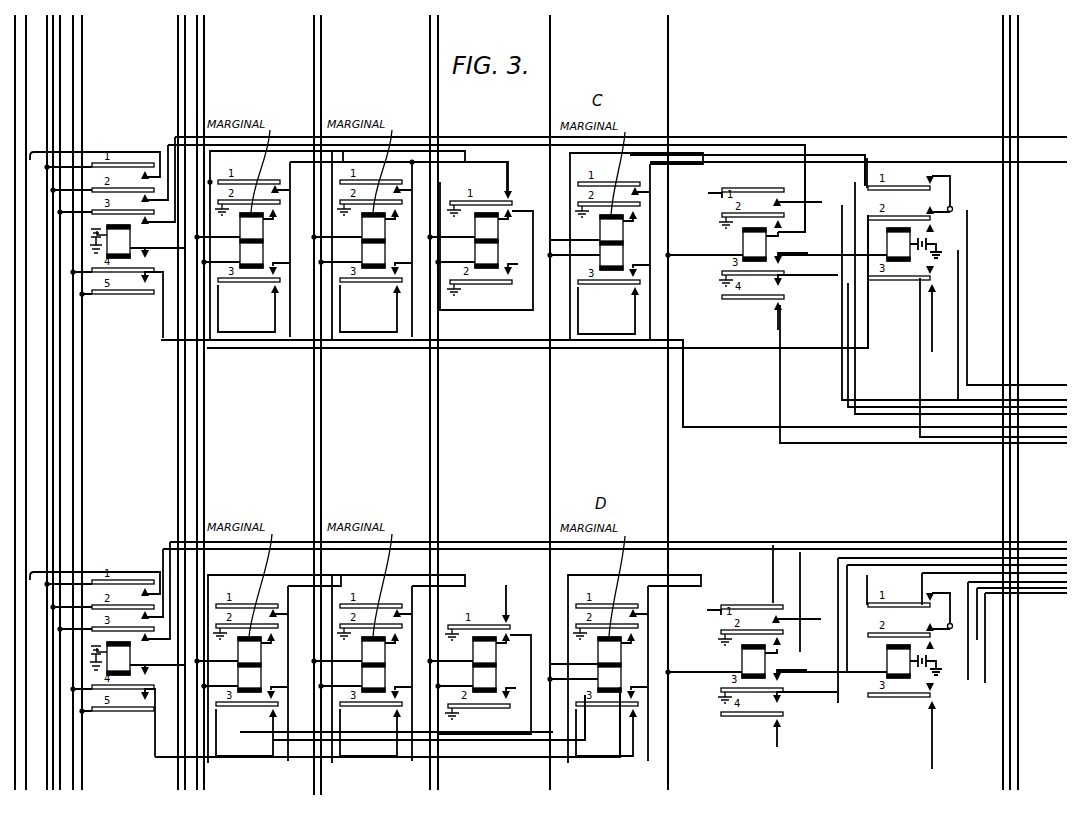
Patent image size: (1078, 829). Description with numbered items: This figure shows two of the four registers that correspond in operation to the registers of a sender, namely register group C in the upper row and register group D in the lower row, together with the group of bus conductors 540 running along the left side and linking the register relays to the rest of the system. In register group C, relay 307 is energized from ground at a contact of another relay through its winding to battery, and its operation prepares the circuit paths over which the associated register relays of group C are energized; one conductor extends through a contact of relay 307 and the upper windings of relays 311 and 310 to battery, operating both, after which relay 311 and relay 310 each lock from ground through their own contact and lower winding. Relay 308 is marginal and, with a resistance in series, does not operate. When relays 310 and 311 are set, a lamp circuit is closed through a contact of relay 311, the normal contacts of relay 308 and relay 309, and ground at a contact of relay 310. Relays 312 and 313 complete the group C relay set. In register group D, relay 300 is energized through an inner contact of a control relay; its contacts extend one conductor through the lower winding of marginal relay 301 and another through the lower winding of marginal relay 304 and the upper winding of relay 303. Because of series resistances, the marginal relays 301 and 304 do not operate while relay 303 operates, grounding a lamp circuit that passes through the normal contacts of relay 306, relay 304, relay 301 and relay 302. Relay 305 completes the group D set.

The conductors 540 is at (80, 84).
The relay 300 is at (120, 675).
The marginal relay 301 is at (258, 671).
The relay 302 is at (362, 661).
The relay 303 is at (474, 677).
The marginal relay 304 is at (620, 662).
The relay 305 is at (742, 661).
The relay 306 is at (887, 661).
The relay 307 is at (132, 242).
The marginal relay 308 is at (263, 241).
The relay 309 is at (385, 241).
The relay 310 is at (496, 262).
The relay 311 is at (611, 270).
The relay 312 is at (743, 243).
The relay 313 is at (899, 261).